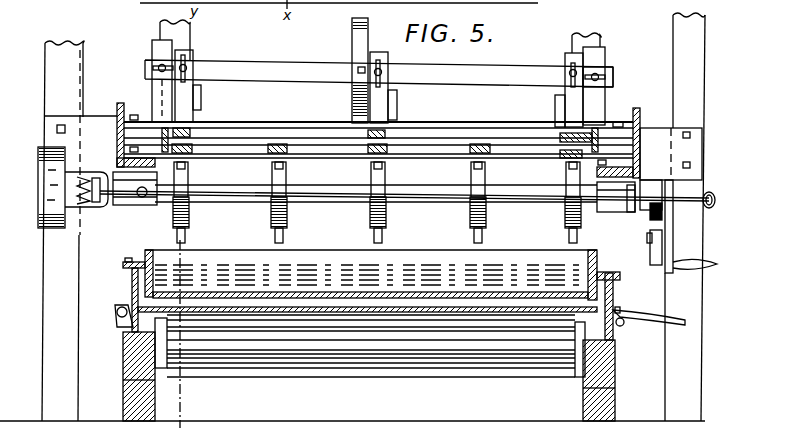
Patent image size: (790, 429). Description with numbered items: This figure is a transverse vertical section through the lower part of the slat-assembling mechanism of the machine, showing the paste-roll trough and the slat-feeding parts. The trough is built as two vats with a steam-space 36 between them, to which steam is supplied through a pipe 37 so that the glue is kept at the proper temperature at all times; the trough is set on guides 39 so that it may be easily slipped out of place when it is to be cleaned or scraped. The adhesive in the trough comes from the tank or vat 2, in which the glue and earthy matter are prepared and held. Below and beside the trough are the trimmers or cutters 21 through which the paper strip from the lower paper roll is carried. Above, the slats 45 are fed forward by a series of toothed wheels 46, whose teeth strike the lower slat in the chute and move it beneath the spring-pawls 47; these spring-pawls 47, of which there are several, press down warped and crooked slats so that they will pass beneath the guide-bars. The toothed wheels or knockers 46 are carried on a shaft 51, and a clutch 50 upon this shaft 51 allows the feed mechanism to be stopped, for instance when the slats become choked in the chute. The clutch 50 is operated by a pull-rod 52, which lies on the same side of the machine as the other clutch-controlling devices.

The tank or vat 2 is at (135, 32).
The trimmers or cutters 21 is at (167, 337).
The steam-space 36 is at (150, 300).
The steam pipe 37 is at (652, 322).
The guides 39 is at (130, 320).
The slats 45 is at (277, 142).
The toothed wheels 46 is at (190, 223).
The spring-pawls 47 is at (195, 117).
The clutch 50 is at (90, 207).
The shaft 51 is at (238, 188).
The pull-rod 52 is at (715, 194).